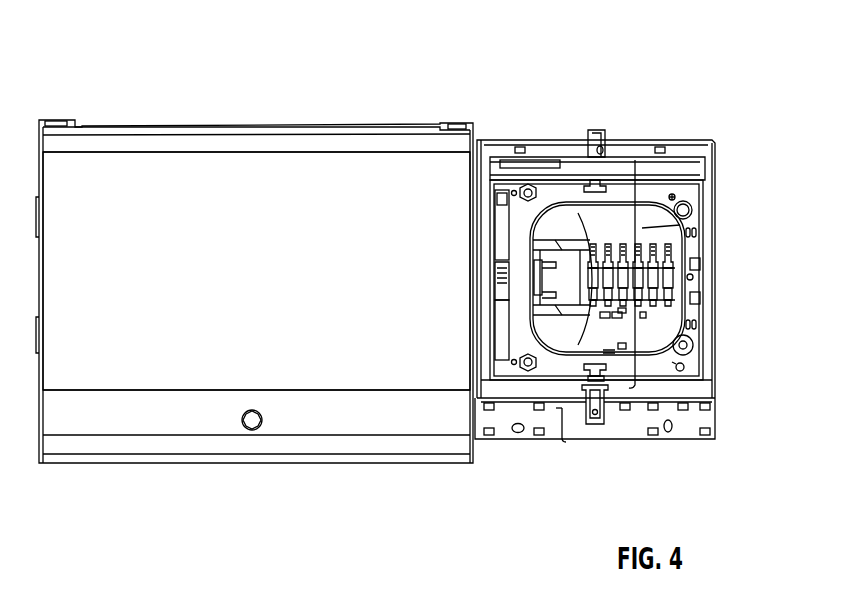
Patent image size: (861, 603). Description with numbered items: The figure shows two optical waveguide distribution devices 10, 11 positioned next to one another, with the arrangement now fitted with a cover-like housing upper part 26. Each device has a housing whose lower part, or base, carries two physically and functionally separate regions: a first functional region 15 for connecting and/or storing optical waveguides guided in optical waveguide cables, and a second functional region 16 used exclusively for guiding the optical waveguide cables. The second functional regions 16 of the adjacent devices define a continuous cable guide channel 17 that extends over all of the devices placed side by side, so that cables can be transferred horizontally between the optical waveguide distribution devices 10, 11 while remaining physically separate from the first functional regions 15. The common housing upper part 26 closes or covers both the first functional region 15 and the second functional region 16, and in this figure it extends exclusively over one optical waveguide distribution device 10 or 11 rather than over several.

The optical waveguide distribution device 10 is at (254, 248).
The optical waveguide distribution device 11 is at (637, 275).
The first functional region 15 is at (637, 228).
The second functional region 16 is at (561, 432).
The continuous cable guide channel 17 is at (690, 421).
The housing upper part 26 is at (253, 299).